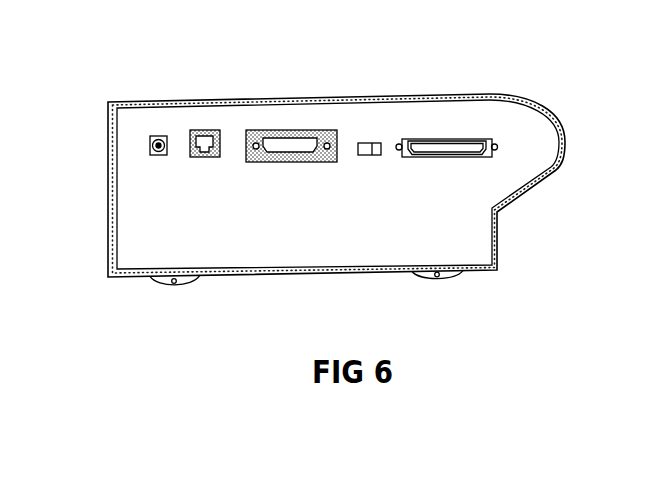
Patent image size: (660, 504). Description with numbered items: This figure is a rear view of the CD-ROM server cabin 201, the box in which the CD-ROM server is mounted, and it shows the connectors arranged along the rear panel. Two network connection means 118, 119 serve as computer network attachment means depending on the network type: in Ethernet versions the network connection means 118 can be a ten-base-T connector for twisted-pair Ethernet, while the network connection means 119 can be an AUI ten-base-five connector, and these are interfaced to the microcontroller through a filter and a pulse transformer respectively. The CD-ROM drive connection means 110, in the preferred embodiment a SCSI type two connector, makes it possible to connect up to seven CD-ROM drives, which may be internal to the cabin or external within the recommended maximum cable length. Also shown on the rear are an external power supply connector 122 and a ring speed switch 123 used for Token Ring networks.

The CD-ROM server cabin 201 is at (107, 118).
The external power supply connector 122 is at (158, 136).
The network connection means 118 is at (204, 130).
The network connection means 119 is at (293, 130).
The ring speed switch 123 is at (370, 143).
The CD-ROM drive connection means 110 is at (445, 139).